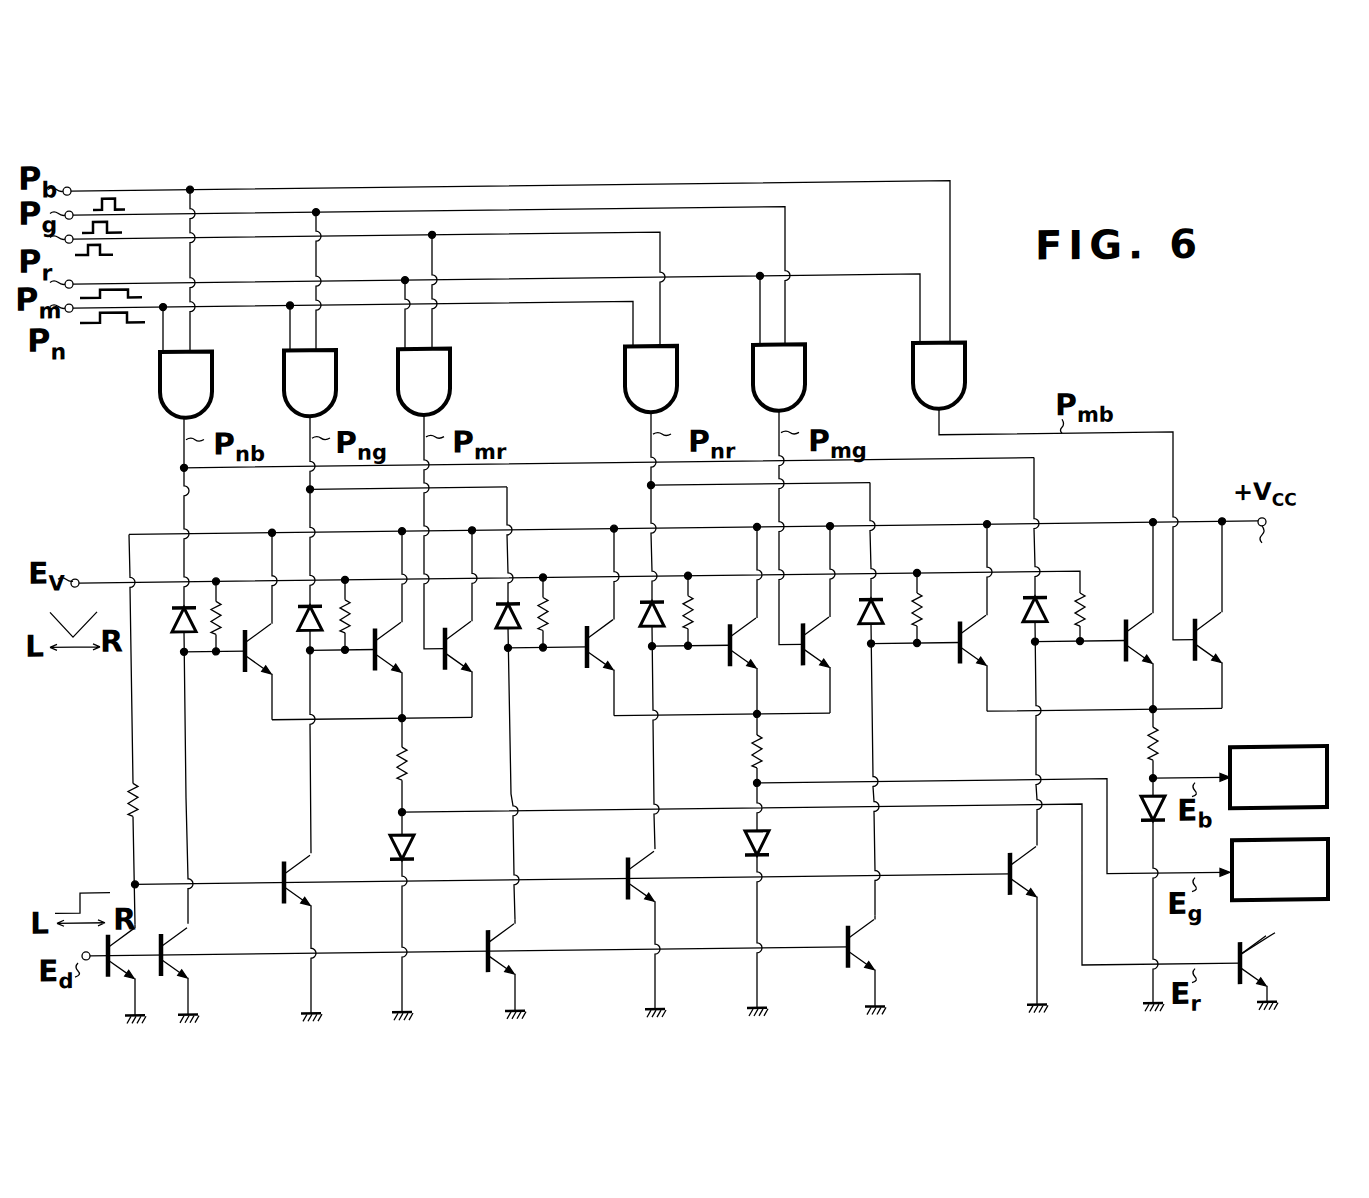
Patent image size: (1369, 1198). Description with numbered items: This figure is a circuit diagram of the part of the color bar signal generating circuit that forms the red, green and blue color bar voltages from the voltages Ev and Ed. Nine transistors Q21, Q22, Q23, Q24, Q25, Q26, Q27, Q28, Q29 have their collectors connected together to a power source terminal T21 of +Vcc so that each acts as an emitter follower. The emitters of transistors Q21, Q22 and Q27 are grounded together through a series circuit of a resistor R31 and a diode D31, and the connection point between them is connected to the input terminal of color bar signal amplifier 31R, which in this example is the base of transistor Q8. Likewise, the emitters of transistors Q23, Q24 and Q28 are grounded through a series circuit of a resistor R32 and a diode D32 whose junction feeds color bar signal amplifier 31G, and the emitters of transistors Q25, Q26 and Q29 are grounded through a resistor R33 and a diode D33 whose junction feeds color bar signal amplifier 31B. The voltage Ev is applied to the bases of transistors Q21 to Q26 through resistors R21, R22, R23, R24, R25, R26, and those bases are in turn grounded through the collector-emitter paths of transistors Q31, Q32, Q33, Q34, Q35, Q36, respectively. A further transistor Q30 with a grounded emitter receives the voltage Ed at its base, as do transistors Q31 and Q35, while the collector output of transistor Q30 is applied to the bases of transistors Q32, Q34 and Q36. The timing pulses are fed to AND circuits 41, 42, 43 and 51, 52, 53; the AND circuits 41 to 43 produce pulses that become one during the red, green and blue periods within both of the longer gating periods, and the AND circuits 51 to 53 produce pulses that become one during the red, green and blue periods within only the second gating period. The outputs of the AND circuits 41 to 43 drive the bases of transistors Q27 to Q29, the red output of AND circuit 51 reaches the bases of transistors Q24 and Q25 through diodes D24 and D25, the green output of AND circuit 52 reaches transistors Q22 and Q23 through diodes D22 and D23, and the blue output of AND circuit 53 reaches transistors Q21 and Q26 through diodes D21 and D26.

The AND circuit 41 is at (450, 380).
The AND circuit 42 is at (805, 380).
The AND circuit 43 is at (965, 380).
The AND circuit 51 is at (677, 380).
The AND circuit 52 is at (336, 380).
The AND circuit 53 is at (226, 380).
The color bar signal amplifier 31B is at (1292, 762).
The color bar signal amplifier 31G is at (1300, 915).
The color bar signal amplifier 31R is at (1342, 1013).
The power source terminal T21 is at (1266, 553).
The transistor Q21 is at (240, 680).
The transistor Q22 is at (372, 680).
The transistor Q23 is at (583, 680).
The transistor Q24 is at (726, 680).
The transistor Q25 is at (956, 680).
The transistor Q26 is at (1122, 680).
The transistor Q27 is at (441, 680).
The transistor Q28 is at (799, 680).
The transistor Q29 is at (1191, 680).
The transistor Q30 is at (106, 980).
The transistor Q31 is at (158, 932).
The transistor Q32 is at (276, 928).
The transistor Q33 is at (485, 982).
The transistor Q34 is at (625, 910).
The transistor Q35 is at (845, 982).
The transistor Q36 is at (1007, 912).
The transistor Q8 is at (1237, 960).
The resistor R21 is at (222, 612).
The resistor R22 is at (351, 612).
The resistor R23 is at (549, 612).
The resistor R24 is at (694, 612).
The resistor R25 is at (923, 612).
The resistor R26 is at (1086, 616).
The resistor R31 is at (408, 768).
The resistor R32 is at (763, 760).
The resistor R33 is at (1183, 757).
The diode D21 is at (178, 640).
The diode D22 is at (316, 640).
The diode D23 is at (514, 640).
The diode D24 is at (658, 640).
The diode D25 is at (877, 640).
The diode D26 is at (1041, 640).
The diode D31 is at (414, 852).
The diode D32 is at (769, 852).
The diode D33 is at (1147, 838).